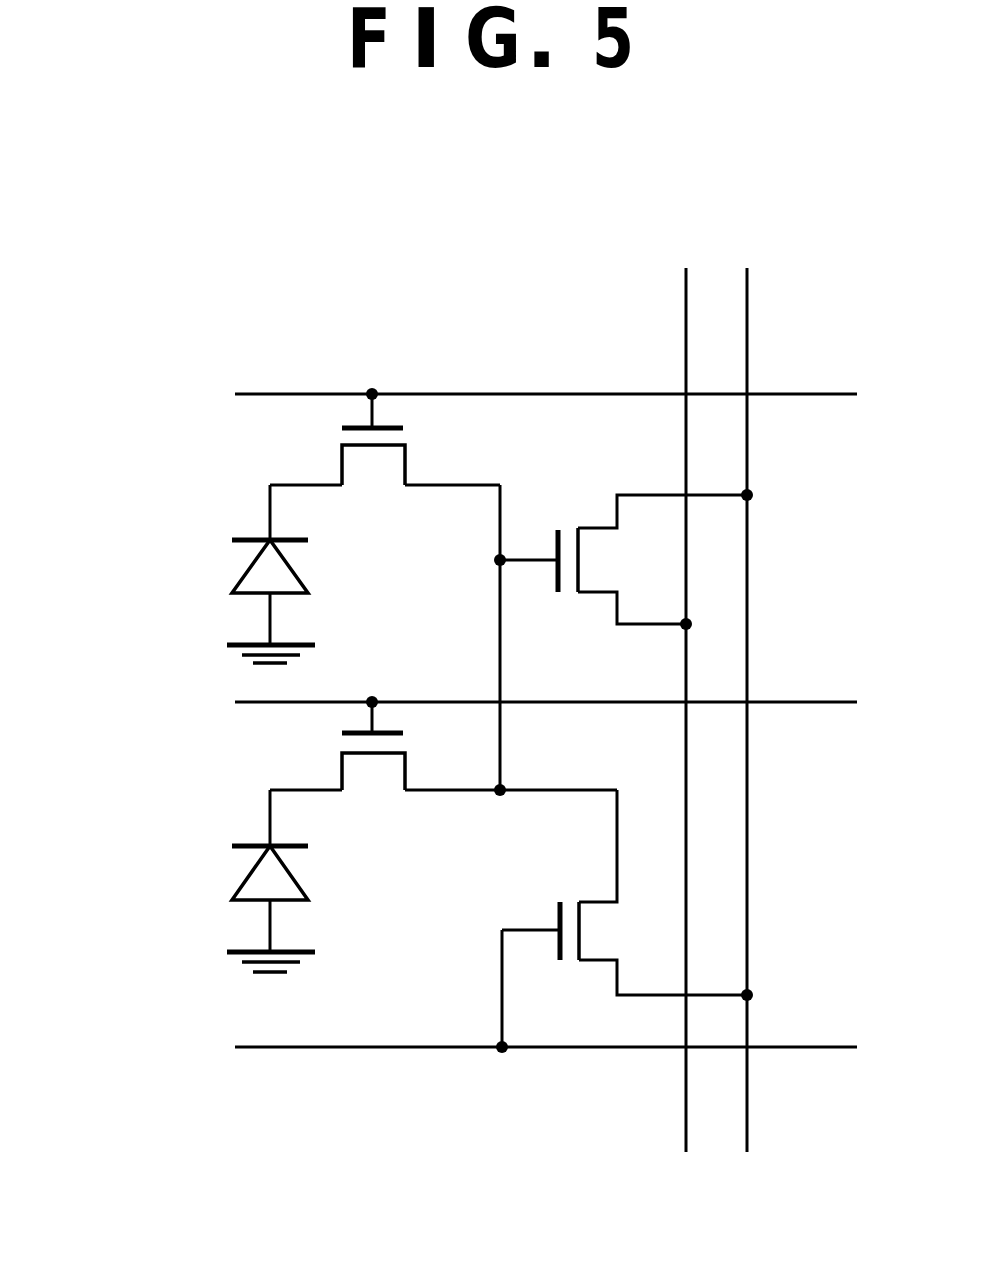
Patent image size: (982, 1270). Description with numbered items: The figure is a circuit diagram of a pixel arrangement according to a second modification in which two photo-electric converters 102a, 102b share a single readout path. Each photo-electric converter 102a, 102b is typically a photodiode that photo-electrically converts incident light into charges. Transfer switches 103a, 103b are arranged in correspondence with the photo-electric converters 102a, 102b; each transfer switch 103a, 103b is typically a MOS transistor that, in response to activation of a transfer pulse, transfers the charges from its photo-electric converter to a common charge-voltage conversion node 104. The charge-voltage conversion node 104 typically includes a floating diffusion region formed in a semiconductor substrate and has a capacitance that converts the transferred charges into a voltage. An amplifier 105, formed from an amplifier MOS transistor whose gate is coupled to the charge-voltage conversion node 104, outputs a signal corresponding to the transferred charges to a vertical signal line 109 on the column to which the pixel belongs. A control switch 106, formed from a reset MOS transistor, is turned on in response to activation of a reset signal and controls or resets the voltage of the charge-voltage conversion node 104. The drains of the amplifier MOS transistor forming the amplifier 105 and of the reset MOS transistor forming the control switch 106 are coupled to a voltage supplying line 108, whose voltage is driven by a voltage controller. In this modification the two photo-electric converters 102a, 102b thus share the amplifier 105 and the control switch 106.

The photo-electric converter 102a is at (260, 866).
The photo-electric converter 102b is at (260, 560).
The transfer switch 103a is at (375, 775).
The transfer switch 103b is at (375, 465).
The charge-voltage conversion node 104 is at (500, 796).
The amplifier 105 is at (575, 525).
The control switch 106 is at (570, 958).
The voltage supplying line 108 is at (747, 268).
The vertical signal line 109 is at (685, 268).